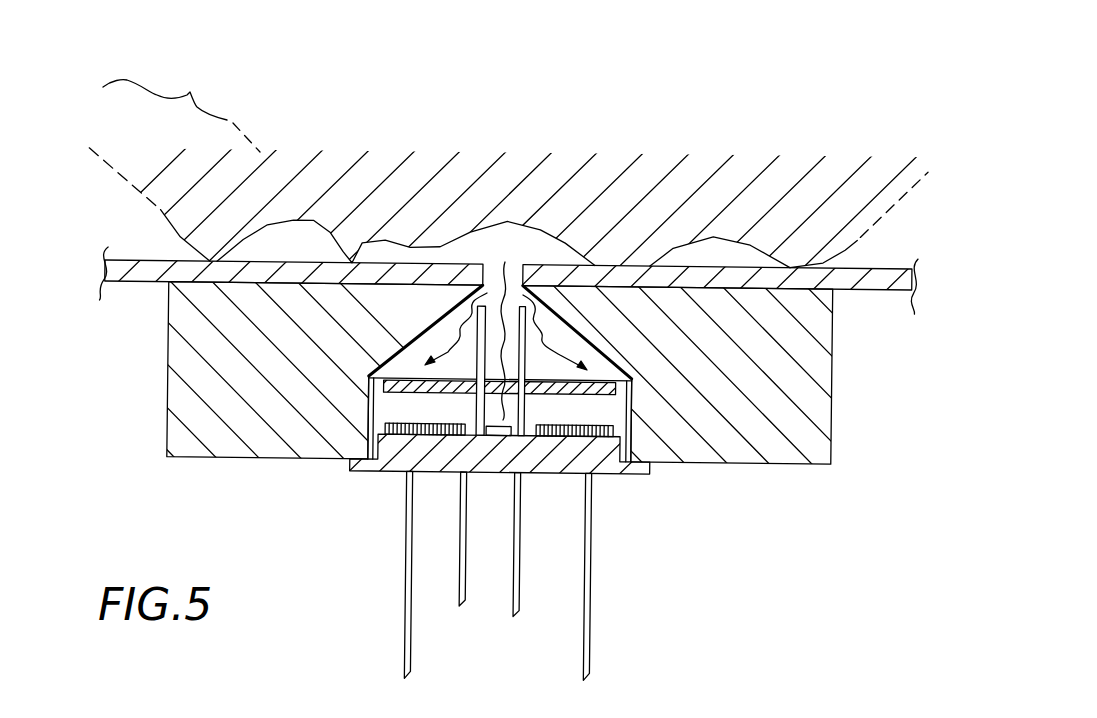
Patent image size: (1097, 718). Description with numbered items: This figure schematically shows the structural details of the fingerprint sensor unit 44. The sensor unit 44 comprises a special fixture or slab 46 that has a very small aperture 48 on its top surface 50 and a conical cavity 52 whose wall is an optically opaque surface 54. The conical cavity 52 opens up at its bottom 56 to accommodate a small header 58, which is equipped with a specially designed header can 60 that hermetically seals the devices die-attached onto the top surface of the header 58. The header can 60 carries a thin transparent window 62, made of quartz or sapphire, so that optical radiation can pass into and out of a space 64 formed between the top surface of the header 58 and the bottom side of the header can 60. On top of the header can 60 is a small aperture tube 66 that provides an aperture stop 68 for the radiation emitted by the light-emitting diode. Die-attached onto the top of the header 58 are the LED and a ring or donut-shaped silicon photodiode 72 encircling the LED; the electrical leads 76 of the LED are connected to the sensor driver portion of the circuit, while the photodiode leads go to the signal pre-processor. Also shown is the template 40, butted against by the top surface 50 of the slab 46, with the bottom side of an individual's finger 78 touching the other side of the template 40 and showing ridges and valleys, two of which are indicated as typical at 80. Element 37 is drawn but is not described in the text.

The lead wires 37 is at (580, 678).
The template 40 is at (275, 260).
The sensor unit 44 is at (690, 84).
The fixture (slab) 46 is at (777, 445).
The aperture 48 is at (505, 262).
The top surface 50 is at (756, 293).
The conical cavity 52 is at (543, 333).
The optically opaque surface 54 is at (487, 293).
The bottom 56 is at (364, 382).
The header 58 is at (603, 467).
The header can 60 is at (642, 430).
The transparent window 62 is at (450, 372).
The space 64 is at (400, 405).
The aperture tube 66 is at (470, 410).
The aperture stop 68 is at (530, 440).
The silicon photodiode 72 is at (415, 432).
The electrical leads 76 is at (466, 605).
The finger 78 is at (181, 109).
The ridges and valleys 80 is at (385, 248).